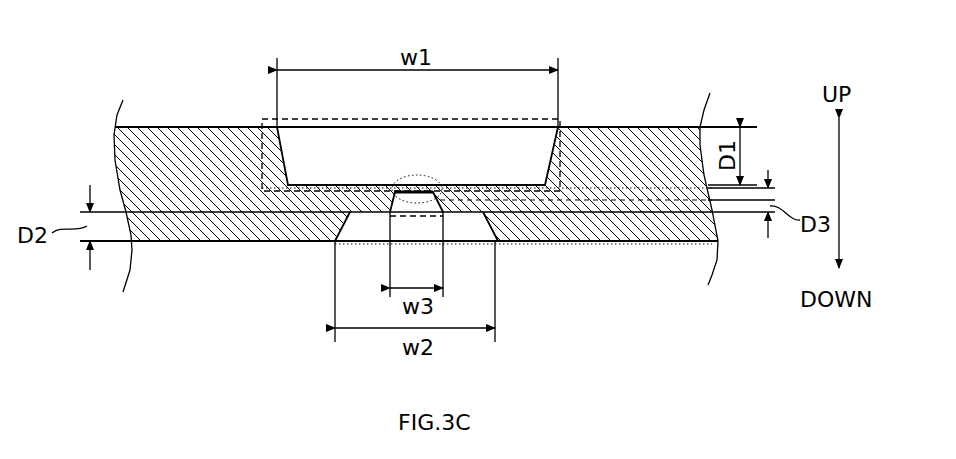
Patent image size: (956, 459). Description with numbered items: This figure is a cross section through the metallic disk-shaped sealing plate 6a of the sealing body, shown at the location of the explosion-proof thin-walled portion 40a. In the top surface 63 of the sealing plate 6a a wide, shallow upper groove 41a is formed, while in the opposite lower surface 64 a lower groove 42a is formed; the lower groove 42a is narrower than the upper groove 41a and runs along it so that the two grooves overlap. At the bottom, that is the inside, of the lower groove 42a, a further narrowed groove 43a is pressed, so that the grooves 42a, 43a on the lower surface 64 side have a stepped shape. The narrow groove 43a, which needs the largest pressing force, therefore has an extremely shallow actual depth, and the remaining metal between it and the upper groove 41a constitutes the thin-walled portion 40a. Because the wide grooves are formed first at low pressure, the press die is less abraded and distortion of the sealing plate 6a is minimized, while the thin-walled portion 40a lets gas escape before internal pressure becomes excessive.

The sealing plate 6a is at (640, 127).
The top surface 63 is at (594, 118).
The lower surface 64 is at (615, 250).
The upper groove 41a is at (276, 118).
The thin-walled portion 40a is at (430, 176).
The lower groove 42a is at (500, 244).
The groove 43a is at (433, 216).